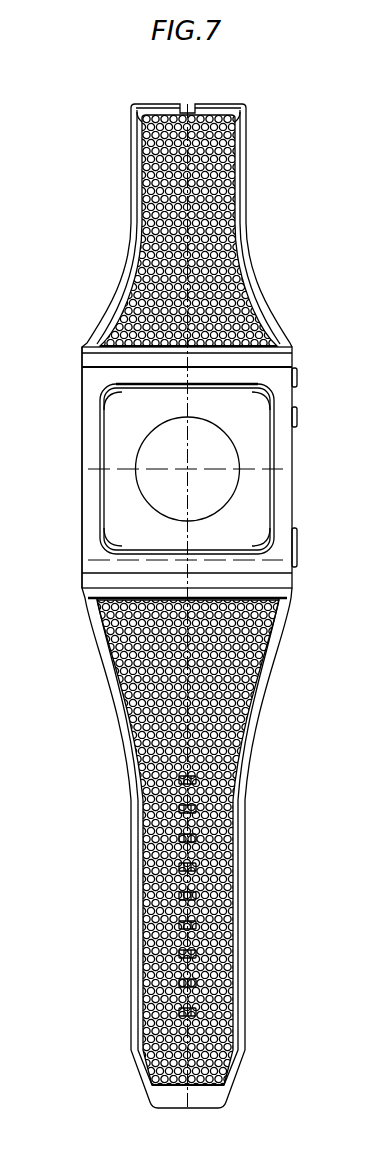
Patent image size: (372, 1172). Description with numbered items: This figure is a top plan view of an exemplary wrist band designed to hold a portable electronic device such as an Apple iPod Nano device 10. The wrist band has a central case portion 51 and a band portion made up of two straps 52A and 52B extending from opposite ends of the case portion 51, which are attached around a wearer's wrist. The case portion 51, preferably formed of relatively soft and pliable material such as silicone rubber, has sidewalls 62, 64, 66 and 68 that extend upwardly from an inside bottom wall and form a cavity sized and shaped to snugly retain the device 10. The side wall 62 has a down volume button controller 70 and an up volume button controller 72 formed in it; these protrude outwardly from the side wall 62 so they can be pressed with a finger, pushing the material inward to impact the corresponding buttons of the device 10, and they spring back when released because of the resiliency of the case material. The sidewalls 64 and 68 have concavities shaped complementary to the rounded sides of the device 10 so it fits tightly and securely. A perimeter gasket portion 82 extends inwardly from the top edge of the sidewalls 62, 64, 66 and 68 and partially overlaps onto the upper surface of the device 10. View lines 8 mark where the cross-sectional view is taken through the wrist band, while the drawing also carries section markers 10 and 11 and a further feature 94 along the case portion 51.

The case portion 51 is at (66, 360).
The strap 52A is at (244, 922).
The strap 52B is at (247, 160).
The side wall 62 is at (293, 451).
The sidewall 64 is at (138, 578).
The sidewall 66 is at (82, 378).
The sidewall 68 is at (233, 358).
The down volume button controller 70 is at (298, 381).
The up volume button controller 72 is at (298, 417).
The perimeter gasket portion 82 is at (227, 378).
The crown member 94 is at (297, 567).
The view lines 8- 8 is at (188, 103).
The Apple iPod Nano device 10 is at (82, 560).
The section line 11- 11 is at (82, 470).